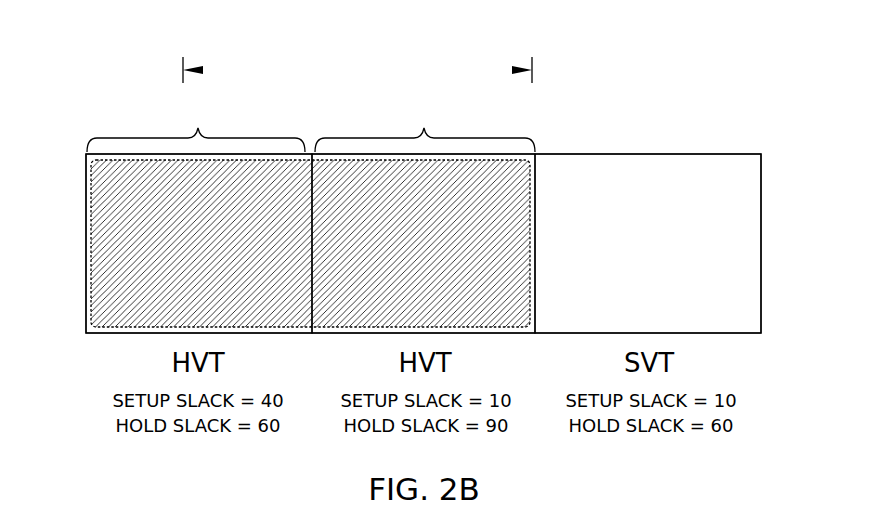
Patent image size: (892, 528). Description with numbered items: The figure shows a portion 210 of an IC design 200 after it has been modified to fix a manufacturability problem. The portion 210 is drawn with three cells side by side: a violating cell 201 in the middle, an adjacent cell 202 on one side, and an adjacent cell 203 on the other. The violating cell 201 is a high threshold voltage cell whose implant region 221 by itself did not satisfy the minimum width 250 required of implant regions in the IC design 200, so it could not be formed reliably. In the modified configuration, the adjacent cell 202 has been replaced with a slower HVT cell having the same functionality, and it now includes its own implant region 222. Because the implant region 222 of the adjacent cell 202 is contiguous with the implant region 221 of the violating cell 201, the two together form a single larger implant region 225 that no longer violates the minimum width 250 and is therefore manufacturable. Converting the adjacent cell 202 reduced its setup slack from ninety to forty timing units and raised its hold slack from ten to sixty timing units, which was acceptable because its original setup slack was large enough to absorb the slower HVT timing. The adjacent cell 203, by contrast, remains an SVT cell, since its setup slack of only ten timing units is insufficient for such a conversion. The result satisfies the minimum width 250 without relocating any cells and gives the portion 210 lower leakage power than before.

The IC design 200 is at (135, 78).
The violating cell 201 is at (406, 195).
The adjacent cell 202 is at (181, 195).
The adjacent cell 203 is at (631, 195).
The portion 210 is at (706, 110).
The implant region 221 is at (424, 128).
The implant region 222 is at (198, 128).
The single larger implant region 225 is at (87, 160).
The minimum width 250 is at (357, 70).